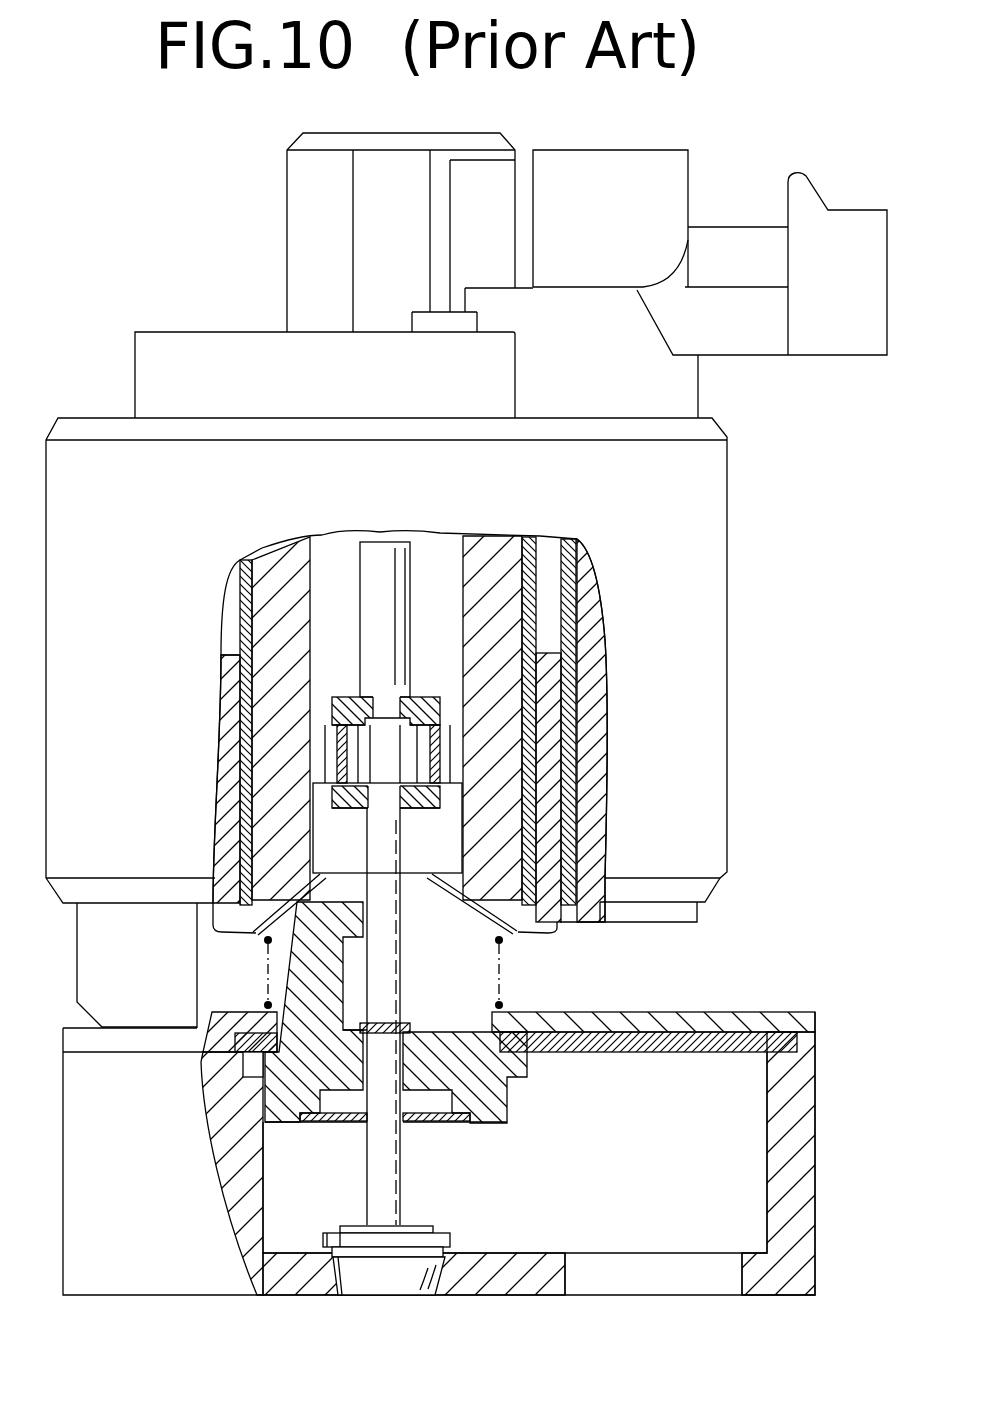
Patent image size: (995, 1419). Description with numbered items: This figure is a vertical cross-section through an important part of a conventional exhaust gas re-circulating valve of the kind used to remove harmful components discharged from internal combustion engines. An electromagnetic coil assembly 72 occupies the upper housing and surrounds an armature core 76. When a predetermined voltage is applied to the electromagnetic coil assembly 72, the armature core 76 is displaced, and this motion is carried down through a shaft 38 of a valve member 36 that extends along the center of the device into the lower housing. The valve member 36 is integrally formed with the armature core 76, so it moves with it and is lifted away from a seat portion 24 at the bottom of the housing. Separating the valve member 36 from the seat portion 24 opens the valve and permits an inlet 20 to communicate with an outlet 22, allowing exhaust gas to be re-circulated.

The inlet 20 is at (655, 1278).
The outlet 22 is at (334, 1265).
The seat portion 24 is at (333, 1233).
The valve member 36 is at (395, 1278).
The shaft 38 is at (410, 1068).
The electromagnetic coil assembly 72 is at (598, 692).
The armature core 76 is at (494, 545).